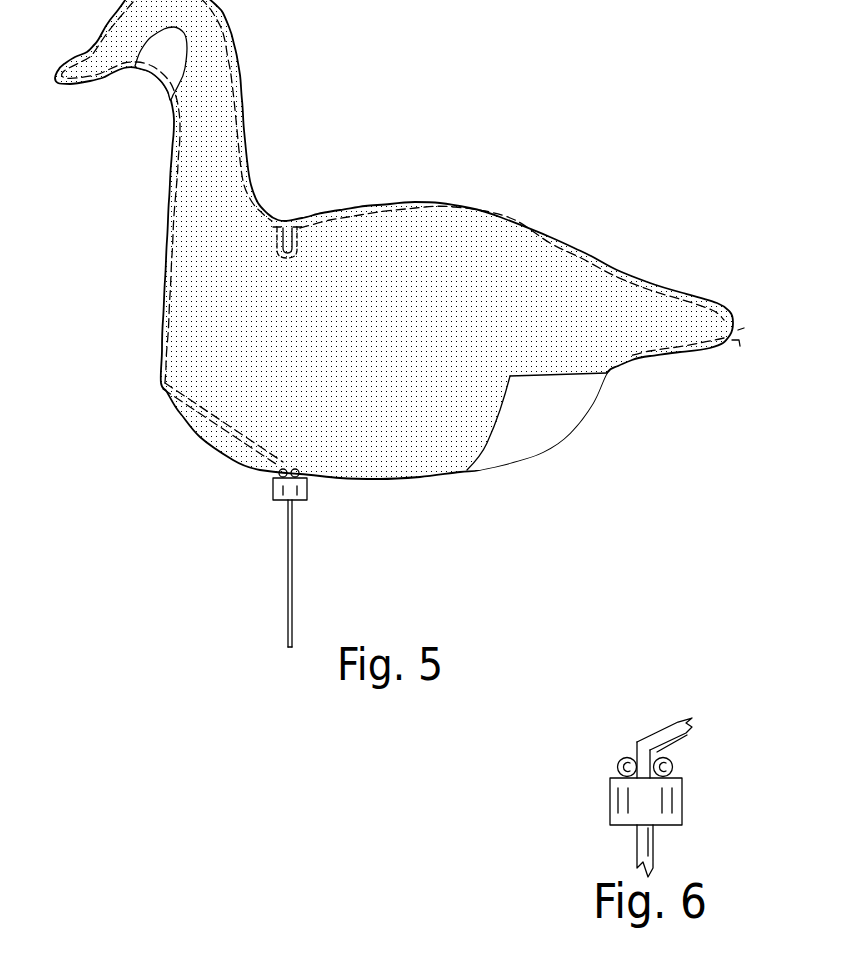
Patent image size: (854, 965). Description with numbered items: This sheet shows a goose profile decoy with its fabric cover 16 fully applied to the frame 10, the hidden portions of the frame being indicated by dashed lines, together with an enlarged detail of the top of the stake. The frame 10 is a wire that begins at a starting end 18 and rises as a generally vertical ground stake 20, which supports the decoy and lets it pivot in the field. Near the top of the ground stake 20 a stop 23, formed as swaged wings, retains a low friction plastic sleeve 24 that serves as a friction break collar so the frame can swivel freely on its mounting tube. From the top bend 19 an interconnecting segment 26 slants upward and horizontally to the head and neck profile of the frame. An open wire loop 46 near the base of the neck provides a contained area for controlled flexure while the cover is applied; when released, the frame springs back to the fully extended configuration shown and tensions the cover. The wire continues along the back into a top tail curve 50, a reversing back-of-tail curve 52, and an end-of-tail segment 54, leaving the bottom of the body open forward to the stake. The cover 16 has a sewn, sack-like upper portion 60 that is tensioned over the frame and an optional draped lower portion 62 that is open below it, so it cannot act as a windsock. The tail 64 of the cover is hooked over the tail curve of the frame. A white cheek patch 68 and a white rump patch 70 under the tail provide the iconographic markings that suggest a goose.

In FIG. 5, the frame 10 is at (567, 234).
In FIG. 5, the fabric cover 16 is at (179, 244).
In FIG. 5, the starting end 18 is at (288, 647).
In FIG. 6, the top bend 19 is at (634, 742).
In FIG. 5, the ground stake 20 is at (287, 570).
In FIG. 6, the ground stake 20 is at (637, 848).
In FIG. 6, the stop 23 is at (617, 766).
In FIG. 5, the sleeve 24 is at (308, 498).
In FIG. 6, the sleeve 24 is at (682, 796).
In FIG. 5, the interconnecting segment 26 is at (245, 468).
In FIG. 6, the interconnecting segment 26 is at (640, 722).
In FIG. 5, the open wire loop 46 is at (300, 262).
In FIG. 5, the top tail curve 50 is at (718, 293).
In FIG. 5, the back-of-tail curve 52 is at (748, 326).
In FIG. 5, the end-of-tail segment 54 is at (677, 358).
In FIG. 5, the upper portion 60 is at (394, 211).
In FIG. 5, the lower portion 62 is at (428, 486).
In FIG. 5, the tail 64 is at (740, 346).
In FIG. 5, the cheek patch 68 is at (159, 68).
In FIG. 5, the rump patch 70 is at (545, 452).